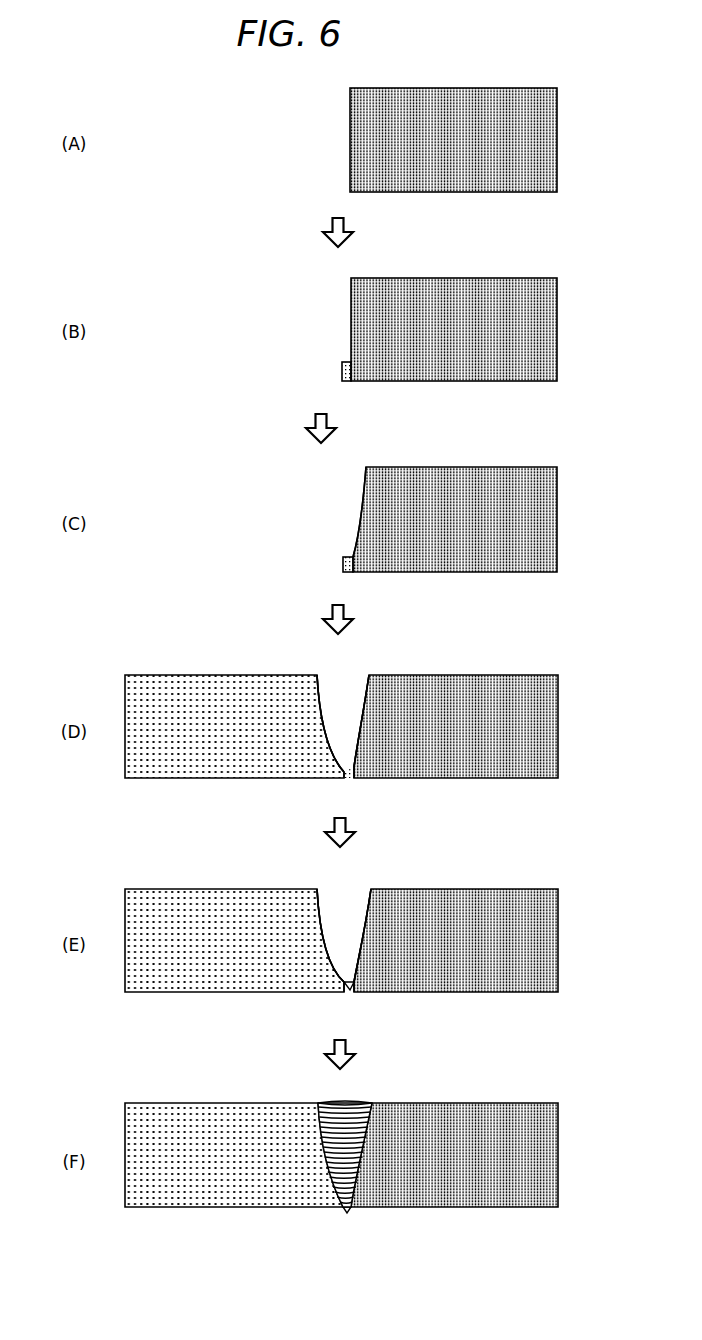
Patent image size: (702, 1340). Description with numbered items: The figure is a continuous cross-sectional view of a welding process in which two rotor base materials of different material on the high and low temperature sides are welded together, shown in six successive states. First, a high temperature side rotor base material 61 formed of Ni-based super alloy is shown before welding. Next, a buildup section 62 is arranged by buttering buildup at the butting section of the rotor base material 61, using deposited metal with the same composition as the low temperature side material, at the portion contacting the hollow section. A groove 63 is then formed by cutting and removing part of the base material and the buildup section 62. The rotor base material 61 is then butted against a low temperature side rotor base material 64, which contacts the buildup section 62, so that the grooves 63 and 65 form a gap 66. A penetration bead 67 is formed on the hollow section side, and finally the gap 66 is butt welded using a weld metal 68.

The high temperature side rotor base material 61 is at (467, 92).
The buildup section 62 is at (342, 369).
The groove 63 is at (358, 530).
The low temperature side rotor base material 64 is at (222, 683).
The groove 65 is at (322, 703).
The gap 66 is at (339, 737).
The penetration bead 67 is at (347, 990).
The weld metal 68 is at (343, 1120).